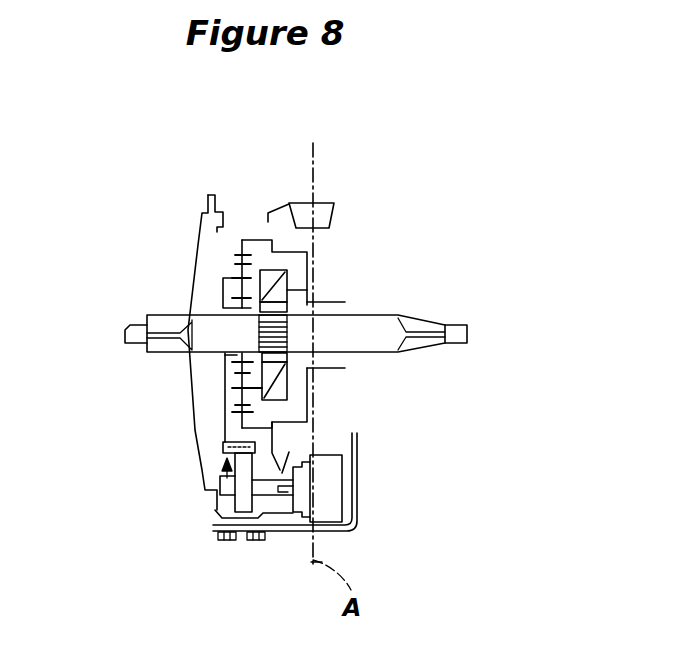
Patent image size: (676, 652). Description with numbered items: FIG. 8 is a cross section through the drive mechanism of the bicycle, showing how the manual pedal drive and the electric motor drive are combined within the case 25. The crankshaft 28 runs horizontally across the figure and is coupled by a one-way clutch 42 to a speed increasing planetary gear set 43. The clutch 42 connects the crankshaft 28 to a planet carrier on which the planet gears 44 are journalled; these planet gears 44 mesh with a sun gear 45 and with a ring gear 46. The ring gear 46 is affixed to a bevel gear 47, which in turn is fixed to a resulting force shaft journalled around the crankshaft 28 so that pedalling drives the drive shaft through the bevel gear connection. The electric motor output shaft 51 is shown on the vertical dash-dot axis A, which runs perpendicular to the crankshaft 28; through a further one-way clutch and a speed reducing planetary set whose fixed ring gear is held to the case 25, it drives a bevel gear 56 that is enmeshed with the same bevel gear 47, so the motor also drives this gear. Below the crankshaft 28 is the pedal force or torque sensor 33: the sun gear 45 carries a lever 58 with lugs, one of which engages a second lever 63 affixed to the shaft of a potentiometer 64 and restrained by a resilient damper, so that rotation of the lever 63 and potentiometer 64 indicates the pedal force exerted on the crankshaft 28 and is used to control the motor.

The case 25 is at (192, 242).
The crankshaft 28 is at (437, 322).
The torque sensor 33 is at (215, 493).
The one-way clutch 42 is at (313, 289).
The planetary gear set 43 is at (210, 289).
The planet gears 44 is at (236, 270).
The sun gear 45 is at (224, 367).
The ring gear 46 is at (242, 252).
The bevel gear 47 is at (283, 205).
The motor output shaft 51 is at (314, 167).
The bevel gear 56 is at (335, 215).
The lever 58 is at (224, 415).
The second lever 63 is at (218, 505).
The potentiometer 64 is at (343, 488).